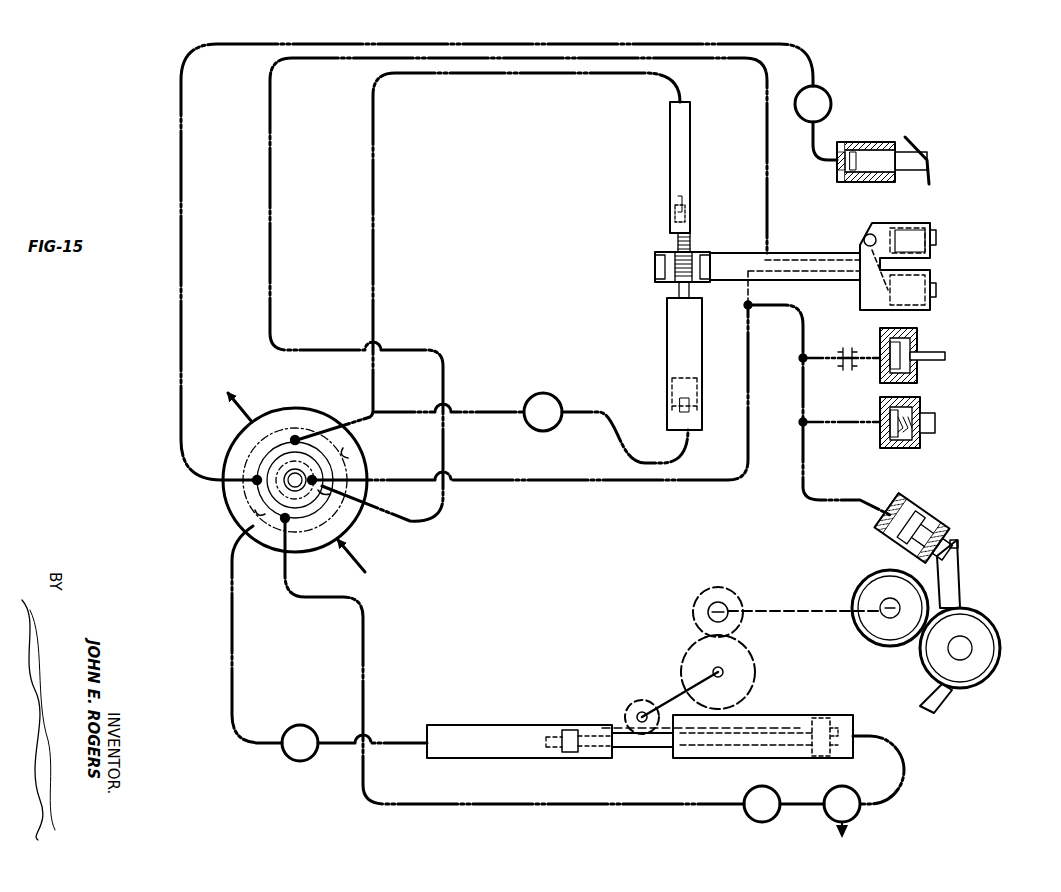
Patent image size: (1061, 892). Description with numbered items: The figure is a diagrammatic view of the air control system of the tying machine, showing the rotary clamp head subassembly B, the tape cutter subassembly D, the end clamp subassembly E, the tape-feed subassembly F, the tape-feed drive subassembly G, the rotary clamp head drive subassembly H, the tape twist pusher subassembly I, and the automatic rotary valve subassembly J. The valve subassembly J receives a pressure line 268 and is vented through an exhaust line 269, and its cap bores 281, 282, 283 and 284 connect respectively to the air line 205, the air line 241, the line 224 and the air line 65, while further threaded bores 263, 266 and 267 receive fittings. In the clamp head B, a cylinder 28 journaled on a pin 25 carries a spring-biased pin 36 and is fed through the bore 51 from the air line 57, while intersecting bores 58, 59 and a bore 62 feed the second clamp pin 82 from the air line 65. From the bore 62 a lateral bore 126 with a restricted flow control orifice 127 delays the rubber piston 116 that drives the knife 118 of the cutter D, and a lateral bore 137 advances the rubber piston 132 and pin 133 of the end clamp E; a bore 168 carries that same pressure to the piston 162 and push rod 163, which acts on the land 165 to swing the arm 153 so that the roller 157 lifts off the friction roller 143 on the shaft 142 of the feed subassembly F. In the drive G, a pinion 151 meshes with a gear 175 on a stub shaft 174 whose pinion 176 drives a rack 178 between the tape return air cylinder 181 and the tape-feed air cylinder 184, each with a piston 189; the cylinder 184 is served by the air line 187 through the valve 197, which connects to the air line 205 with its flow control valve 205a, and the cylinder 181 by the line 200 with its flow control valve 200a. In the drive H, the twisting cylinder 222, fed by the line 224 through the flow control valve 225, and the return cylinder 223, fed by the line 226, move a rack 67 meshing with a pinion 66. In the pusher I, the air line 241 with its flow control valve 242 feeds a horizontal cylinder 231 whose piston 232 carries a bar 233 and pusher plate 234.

The air line 241 is at (178, 104).
The flow control valve 242 is at (821, 98).
The air line 57 is at (272, 160).
The line 226 is at (550, 78).
The line 224 is at (497, 410).
The flow control valve 225 is at (544, 395).
The air line 65 is at (494, 483).
The untwisting or return cylinder 223 is at (690, 168).
The pinion 66 is at (692, 252).
The rack 67 is at (678, 290).
The tape clamp head twisting cylinder 222 is at (667, 369).
The bore 51 is at (785, 264).
The bore 58 is at (804, 288).
The bore 59 is at (765, 280).
The bore 62 is at (806, 335).
The lateral bore 126 is at (841, 374).
The restricted flow control orifice 127 is at (845, 372).
The lateral bore 137 is at (826, 424).
The piston 232 is at (889, 148).
The bar 233 is at (884, 145).
The pusher plate 234 is at (915, 136).
The horizontal cylinder 231 is at (870, 170).
The pin 25 is at (865, 237).
The cylinder 28 is at (908, 222).
The pin 36 is at (933, 231).
The piston rod or pin 82 is at (934, 297).
The rubber piston 116 is at (886, 333).
The knife 118 is at (930, 360).
The rubber piston 132 is at (890, 409).
The pin 133 is at (933, 428).
The bore 168 is at (916, 526).
The piston 162 is at (905, 530).
The push rod or pin 163 is at (942, 527).
The land 165 is at (959, 549).
The arm 153 is at (957, 578).
The roller 157 is at (998, 645).
The friction roller 143 is at (828, 607).
The shaft 142 is at (846, 586).
The pinion 151 is at (716, 587).
The gear 175 is at (696, 641).
The stub shaft 174 is at (676, 685).
The pinion 176 is at (628, 711).
The tape return air cylinder 181 is at (632, 734).
The piston 189 is at (569, 758).
The rack 178 is at (638, 750).
The tape-feed air cylinder 184 is at (710, 760).
The air line 187 is at (906, 758).
The valve 197 is at (851, 788).
The flow control valve 205a is at (748, 808).
The air line 205 is at (368, 640).
The line 200 is at (234, 740).
The flow control valve 200a is at (303, 760).
The threaded bore 283 is at (294, 435).
The threaded bore 282 is at (254, 483).
The threaded bore 284 is at (318, 478).
The threaded bore 281 is at (282, 522).
The threaded bore 263 is at (352, 452).
The threaded bore 266 is at (328, 494).
The threaded bore 267 is at (256, 513).
The exhaust line 269 is at (247, 410).
The pressure line 268 is at (367, 565).
The rotary clamp head drive subassembly H is at (672, 258).
The rotary clamp head subassembly B is at (913, 257).
The tape cutter subassembly D is at (918, 347).
The end clamp subassembly E is at (918, 418).
The tape twist pusher subassembly I is at (933, 147).
The tape-feed subassembly F is at (979, 641).
The tape-feed drive subassembly G is at (675, 674).
The automatic rotary valve subassembly J is at (287, 476).